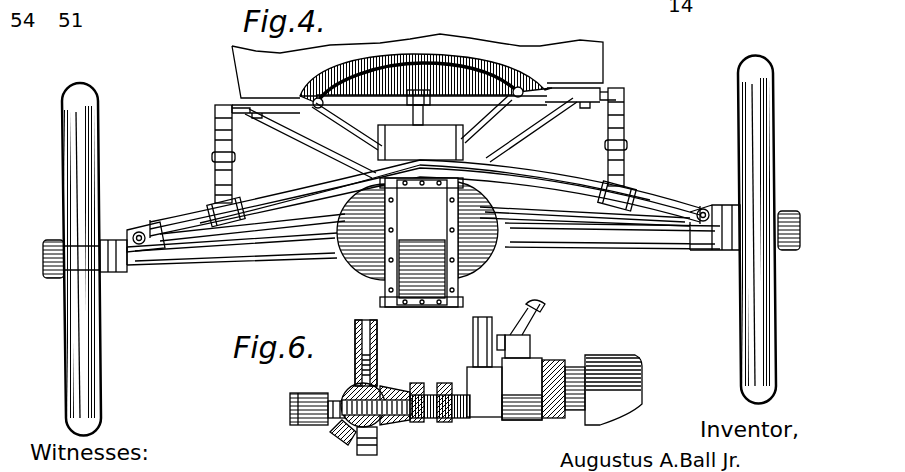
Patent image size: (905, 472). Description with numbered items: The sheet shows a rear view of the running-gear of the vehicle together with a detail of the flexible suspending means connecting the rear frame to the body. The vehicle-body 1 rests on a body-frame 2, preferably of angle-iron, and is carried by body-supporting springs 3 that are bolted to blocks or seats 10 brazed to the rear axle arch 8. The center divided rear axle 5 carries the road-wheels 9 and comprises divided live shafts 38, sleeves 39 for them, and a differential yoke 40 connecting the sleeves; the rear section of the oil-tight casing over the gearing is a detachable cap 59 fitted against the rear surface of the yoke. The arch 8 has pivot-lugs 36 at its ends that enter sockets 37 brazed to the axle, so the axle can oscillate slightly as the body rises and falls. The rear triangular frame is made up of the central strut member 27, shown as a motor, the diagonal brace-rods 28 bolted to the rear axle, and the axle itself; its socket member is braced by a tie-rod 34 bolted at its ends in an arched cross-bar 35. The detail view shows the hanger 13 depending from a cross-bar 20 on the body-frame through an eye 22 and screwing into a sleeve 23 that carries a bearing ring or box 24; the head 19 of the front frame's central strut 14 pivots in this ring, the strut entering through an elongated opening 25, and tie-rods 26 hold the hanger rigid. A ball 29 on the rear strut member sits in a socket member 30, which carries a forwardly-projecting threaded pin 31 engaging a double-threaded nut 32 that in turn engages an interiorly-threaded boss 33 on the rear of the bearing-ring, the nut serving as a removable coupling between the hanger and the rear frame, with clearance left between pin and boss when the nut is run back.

In FIG. 4, the vehicle-body 1 is at (571, 52).
In FIG. 4, the body-frame 2 is at (590, 90).
In FIG. 4, the body-supporting springs 3 is at (622, 121).
In FIG. 4, the center divided rear axle 5 is at (263, 263).
In FIG. 4, the rear axle arch 8 is at (528, 172).
In FIG. 4, the road-wheels 9 is at (94, 175).
In FIG. 4, the blocks or seats 10 is at (213, 208).
In FIG. 4, the hanger 13 is at (425, 117).
In FIG. 6, the hanger 13 is at (355, 358).
In FIG. 6, the central strut 14 is at (289, 403).
In FIG. 6, the head 19 is at (352, 392).
In FIG. 4, the cross-bar 20 is at (362, 105).
In FIG. 4, the eye 22 is at (407, 100).
In FIG. 6, the sleeve 23 is at (376, 352).
In FIG. 6, the bearing ring or box 24 is at (385, 423).
In FIG. 6, the elongated opening 25 is at (340, 424).
In FIG. 4, the tie-rods 26 is at (306, 144).
In FIG. 6, the tie-rods 26 is at (357, 440).
In FIG. 6, the central strut member 27 is at (628, 390).
In FIG. 4, the diagonal brace-rods 28 is at (573, 224).
In FIG. 6, the ball 29 is at (560, 368).
In FIG. 6, the socket member 30 is at (527, 414).
In FIG. 6, the threaded pin 31 is at (458, 420).
In FIG. 6, the double-threaded nut 32 is at (419, 422).
In FIG. 6, the threaded boss 33 is at (401, 392).
In FIG. 4, the tie-rod 34 is at (352, 135).
In FIG. 6, the tie-rod 34 is at (537, 310).
In FIG. 4, the arched cross-bar 35 is at (470, 62).
In FIG. 4, the pivot-lugs 36 is at (148, 226).
In FIG. 4, the sockets 37 is at (144, 272).
In FIG. 4, the divided live shafts or axles 38 is at (720, 220).
In FIG. 4, the sleeves 39 is at (313, 256).
In FIG. 4, the differential yoke 40 is at (372, 277).
In FIG. 4, the detachable cap 59 is at (421, 242).